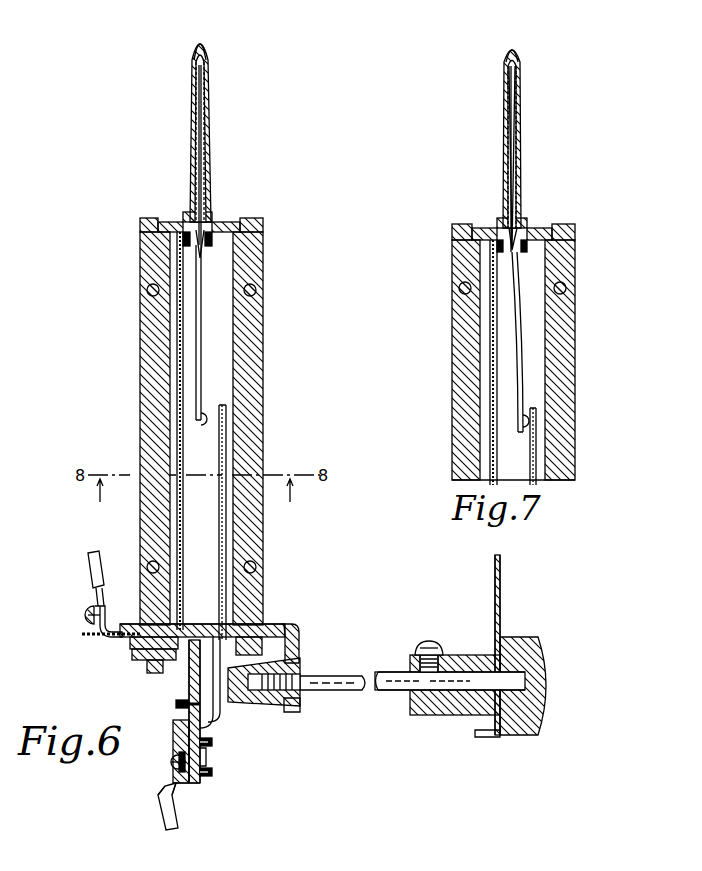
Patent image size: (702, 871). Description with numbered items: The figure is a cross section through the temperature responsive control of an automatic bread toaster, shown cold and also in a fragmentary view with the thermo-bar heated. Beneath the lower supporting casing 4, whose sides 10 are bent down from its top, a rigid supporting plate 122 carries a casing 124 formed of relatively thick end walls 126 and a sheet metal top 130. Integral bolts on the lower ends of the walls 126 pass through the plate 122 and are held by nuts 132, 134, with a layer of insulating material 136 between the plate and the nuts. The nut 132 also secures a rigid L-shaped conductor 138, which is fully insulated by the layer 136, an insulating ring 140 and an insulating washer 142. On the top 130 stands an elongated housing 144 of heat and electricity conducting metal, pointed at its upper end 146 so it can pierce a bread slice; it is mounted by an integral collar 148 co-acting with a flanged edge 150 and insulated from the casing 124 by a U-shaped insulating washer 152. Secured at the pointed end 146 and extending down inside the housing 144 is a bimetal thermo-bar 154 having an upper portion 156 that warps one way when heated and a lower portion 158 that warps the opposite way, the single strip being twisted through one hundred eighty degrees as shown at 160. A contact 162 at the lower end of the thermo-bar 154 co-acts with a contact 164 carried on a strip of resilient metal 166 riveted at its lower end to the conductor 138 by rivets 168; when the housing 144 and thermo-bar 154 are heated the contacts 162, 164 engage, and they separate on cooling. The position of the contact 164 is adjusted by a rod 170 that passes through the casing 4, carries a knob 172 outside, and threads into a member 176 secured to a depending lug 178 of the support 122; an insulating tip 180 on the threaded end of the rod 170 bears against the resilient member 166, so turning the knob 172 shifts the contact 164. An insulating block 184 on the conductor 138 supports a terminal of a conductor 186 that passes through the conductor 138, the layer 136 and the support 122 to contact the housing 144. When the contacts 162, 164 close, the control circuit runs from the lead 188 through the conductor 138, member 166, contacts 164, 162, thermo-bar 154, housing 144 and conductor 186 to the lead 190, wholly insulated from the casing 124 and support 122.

In FIG. 6, the lower supporting casing 4 is at (509, 572).
In FIG. 6, the sides 10 is at (501, 598).
In FIG. 6, the supporting plate 122 is at (272, 624).
In FIG. 6, the casing 124 is at (131, 365).
In FIG. 7, the casing 124 is at (441, 392).
In FIG. 6, the end walls 126 is at (148, 428).
In FIG. 7, the end walls 126 is at (462, 432).
In FIG. 6, the top 130 is at (228, 222).
In FIG. 7, the top 130 is at (482, 225).
In FIG. 6, the nut 132 is at (147, 664).
In FIG. 6, the nut 134 is at (262, 650).
In FIG. 6, the layer of insulating material 136 is at (84, 633).
In FIG. 6, the rigid L-shaped conductor 138 is at (190, 680).
In FIG. 6, the insulating ring 140 is at (136, 644).
In FIG. 6, the insulating washer 142 is at (140, 655).
In FIG. 6, the elongated housing 144 is at (225, 144).
In FIG. 7, the elongated housing 144 is at (512, 139).
In FIG. 6, the pointed end 146 is at (208, 56).
In FIG. 7, the pointed end 146 is at (505, 50).
In FIG. 6, the integral collar 148 is at (185, 222).
In FIG. 7, the integral collar 148 is at (528, 222).
In FIG. 6, the flanged edge 150 is at (216, 244).
In FIG. 7, the flanged edge 150 is at (524, 236).
In FIG. 6, the insulating washer 152 is at (212, 218).
In FIG. 7, the insulating washer 152 is at (530, 226).
In FIG. 6, the thermo-bar 154 is at (187, 173).
In FIG. 6, the upper portion 156 is at (196, 112).
In FIG. 7, the upper portion 156 is at (508, 168).
In FIG. 6, the lower portion 158 is at (202, 362).
In FIG. 7, the lower portion 158 is at (522, 370).
In FIG. 7, the twist 160 is at (512, 245).
In FIG. 6, the contact 162 is at (204, 416).
In FIG. 7, the contact 162 is at (524, 430).
In FIG. 6, the contact 164 is at (219, 432).
In FIG. 7, the contact 164 is at (536, 428).
In FIG. 6, the strip of resilient metal 166 is at (226, 555).
In FIG. 6, the rivets 168 is at (212, 772).
In FIG. 6, the rod 170 is at (350, 694).
In FIG. 6, the knob 172 is at (552, 655).
In FIG. 6, the member 176 is at (272, 702).
In FIG. 6, the depending lug 178 is at (298, 654).
In FIG. 6, the tip 180 is at (223, 698).
In FIG. 6, the insulating block 184 is at (176, 735).
In FIG. 6, the conductor 186 is at (180, 512).
In FIG. 7, the conductor 186 is at (492, 455).
In FIG. 6, the lead 188 is at (88, 572).
In FIG. 6, the lead 190 is at (158, 823).